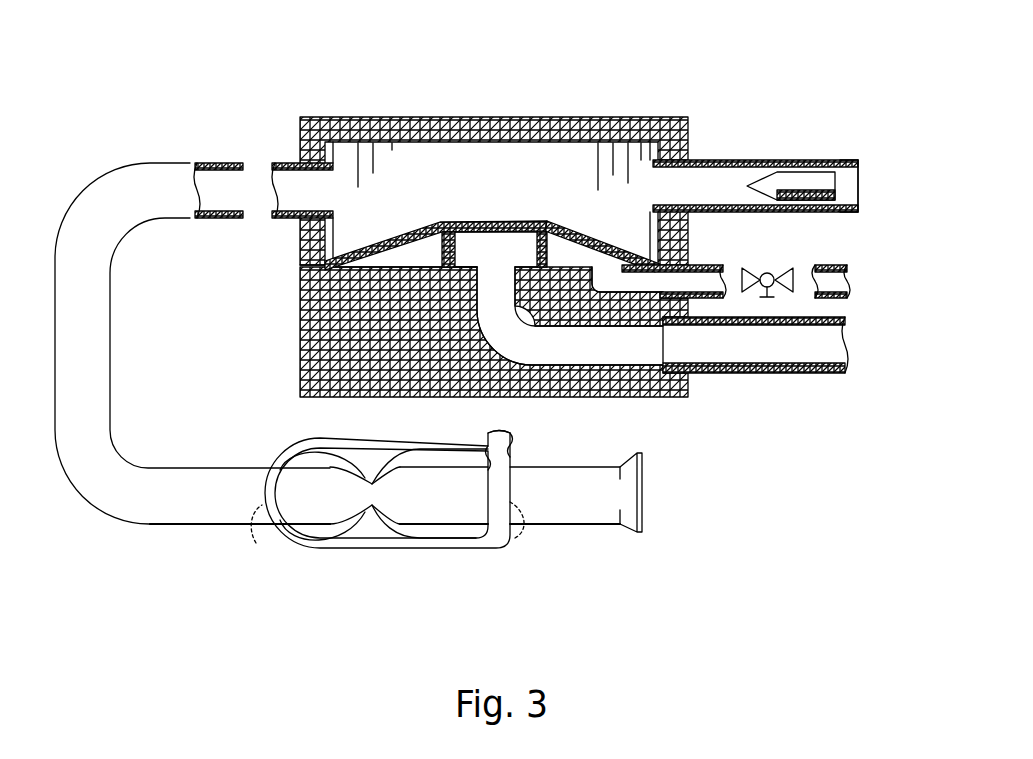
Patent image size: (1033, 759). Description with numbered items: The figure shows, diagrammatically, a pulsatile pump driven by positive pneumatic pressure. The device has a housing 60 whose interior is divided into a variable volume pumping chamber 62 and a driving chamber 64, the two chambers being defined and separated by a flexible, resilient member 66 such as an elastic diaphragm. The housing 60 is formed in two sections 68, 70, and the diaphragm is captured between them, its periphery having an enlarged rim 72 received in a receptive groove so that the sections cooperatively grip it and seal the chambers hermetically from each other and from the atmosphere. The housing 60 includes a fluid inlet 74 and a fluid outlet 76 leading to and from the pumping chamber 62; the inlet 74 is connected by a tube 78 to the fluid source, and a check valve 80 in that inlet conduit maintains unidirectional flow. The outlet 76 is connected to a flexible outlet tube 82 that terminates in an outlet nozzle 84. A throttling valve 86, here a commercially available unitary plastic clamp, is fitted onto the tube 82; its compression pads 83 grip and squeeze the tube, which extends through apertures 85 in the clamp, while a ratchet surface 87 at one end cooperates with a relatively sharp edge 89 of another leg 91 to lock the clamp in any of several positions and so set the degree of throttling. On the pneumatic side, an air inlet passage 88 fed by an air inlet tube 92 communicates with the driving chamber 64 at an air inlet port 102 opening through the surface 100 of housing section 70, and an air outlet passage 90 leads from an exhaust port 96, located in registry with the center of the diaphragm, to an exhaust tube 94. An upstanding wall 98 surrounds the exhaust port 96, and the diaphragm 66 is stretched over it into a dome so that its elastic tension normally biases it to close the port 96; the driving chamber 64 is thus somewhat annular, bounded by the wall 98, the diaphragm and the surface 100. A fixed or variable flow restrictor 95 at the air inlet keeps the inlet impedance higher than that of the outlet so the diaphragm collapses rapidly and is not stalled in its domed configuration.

The housing 60 is at (494, 150).
The pumping chamber 62 is at (470, 158).
The driving chamber 64 is at (417, 256).
The flexible, resilient member 66 is at (568, 218).
The housing section 68 is at (512, 119).
The housing section 70 is at (407, 383).
The enlarged rim 72 is at (304, 263).
The fluid inlet 74 is at (688, 170).
The fluid outlet 76 is at (302, 163).
The tube 78 is at (845, 162).
The check valve 80 is at (795, 178).
The outlet tube 82 is at (160, 172).
The compression pads 83 is at (372, 505).
The outlet nozzle 84 is at (643, 492).
The apertures 85 is at (495, 580).
The throttling valve 86 is at (385, 497).
The ratchet surface 87 is at (486, 462).
The air inlet passage 88 is at (640, 283).
The sharp edge 89 is at (492, 436).
The air outlet passage 90 is at (553, 352).
The leg 91 is at (395, 440).
The air inlet tube 92 is at (702, 263).
The exhaust tube 94 is at (750, 372).
The flow restrictor 95 is at (787, 266).
The exhaust port 96 is at (498, 277).
The upstanding wall 98 is at (547, 252).
The surface 100 is at (392, 264).
The air inlet port 102 is at (605, 272).